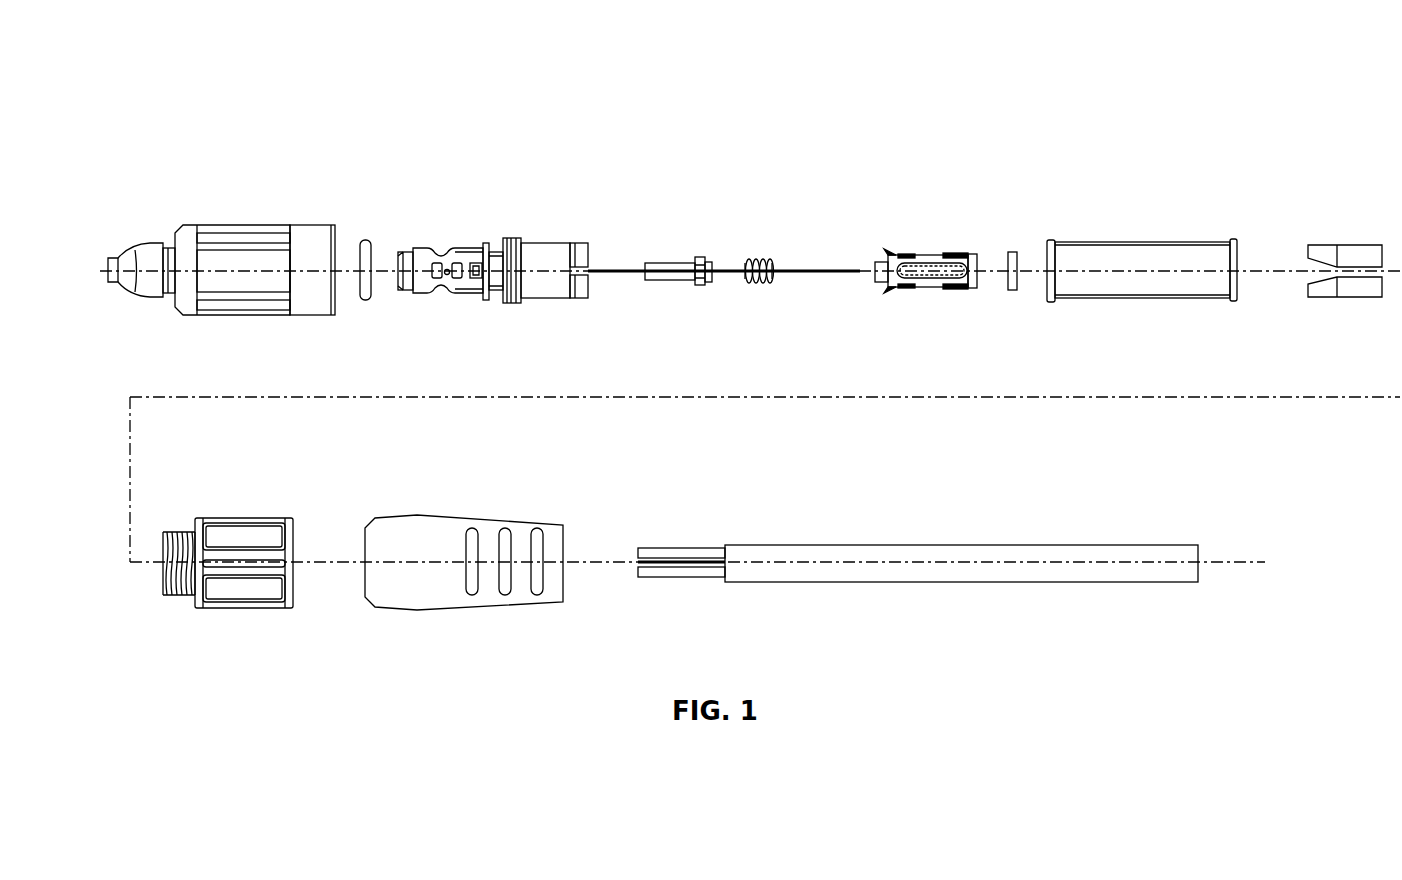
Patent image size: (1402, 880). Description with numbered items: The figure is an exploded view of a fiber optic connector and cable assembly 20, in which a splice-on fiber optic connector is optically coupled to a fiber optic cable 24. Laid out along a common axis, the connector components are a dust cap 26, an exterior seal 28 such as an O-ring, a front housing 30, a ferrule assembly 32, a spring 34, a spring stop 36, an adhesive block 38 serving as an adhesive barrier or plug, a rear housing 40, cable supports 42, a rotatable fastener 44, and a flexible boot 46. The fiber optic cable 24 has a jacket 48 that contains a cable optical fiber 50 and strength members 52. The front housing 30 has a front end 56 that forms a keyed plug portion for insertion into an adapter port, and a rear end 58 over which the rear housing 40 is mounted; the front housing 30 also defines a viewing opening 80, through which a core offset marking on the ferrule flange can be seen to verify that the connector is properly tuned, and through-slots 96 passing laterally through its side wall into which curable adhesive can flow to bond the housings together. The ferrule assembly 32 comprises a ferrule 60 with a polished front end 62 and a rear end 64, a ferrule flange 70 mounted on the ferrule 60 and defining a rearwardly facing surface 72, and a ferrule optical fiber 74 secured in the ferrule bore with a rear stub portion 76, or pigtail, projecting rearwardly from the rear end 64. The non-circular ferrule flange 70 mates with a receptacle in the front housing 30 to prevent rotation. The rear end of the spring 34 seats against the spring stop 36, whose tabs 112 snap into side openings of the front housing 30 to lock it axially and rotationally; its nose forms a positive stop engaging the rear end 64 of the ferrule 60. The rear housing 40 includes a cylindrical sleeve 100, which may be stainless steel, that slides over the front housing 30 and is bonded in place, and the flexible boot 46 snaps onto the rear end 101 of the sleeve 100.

The fiber optic connector and cable assembly 20 is at (210, 95).
The fiber optic cable 24 is at (902, 543).
The dust cap 26 is at (217, 230).
The exterior seal 28 is at (365, 238).
The front housing 30 is at (468, 246).
The ferrule assembly 32 is at (862, 163).
The spring 34 is at (755, 259).
The spring stop 36 is at (932, 252).
The adhesive block 38 is at (1012, 252).
The rear housing 40 is at (1132, 242).
The cable supports 42 is at (1347, 245).
The rotatable fastener 44 is at (227, 518).
The flexible boot 46 is at (457, 517).
The jacket 48 is at (760, 545).
The cable optical fiber 50 is at (638, 563).
The strength members 52 is at (647, 548).
The front end 56 is at (403, 290).
The rear end 58 is at (587, 298).
The ferrule 60 is at (672, 281).
The front end 62 is at (642, 282).
The rear end 64 is at (710, 262).
The ferrule flange 70 is at (699, 257).
The rearwardly facing surface 72 is at (707, 284).
The ferrule optical fiber 74 is at (792, 273).
The rear stub portion 76 is at (850, 273).
The viewing opening 80 is at (447, 277).
The through-slots 96 is at (577, 247).
The cylindrical sleeve 100 is at (1132, 300).
The rear end 101 is at (1236, 241).
The tabs 112 is at (895, 253).